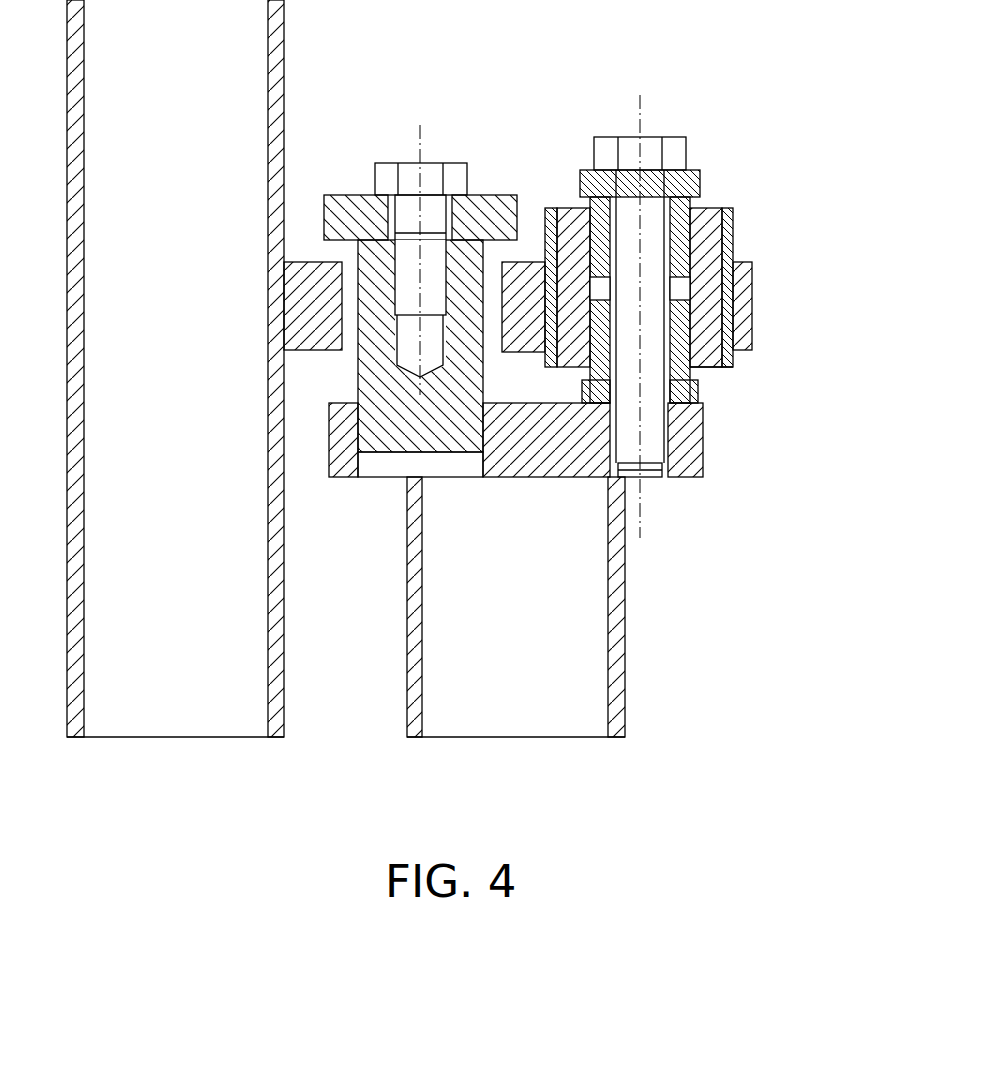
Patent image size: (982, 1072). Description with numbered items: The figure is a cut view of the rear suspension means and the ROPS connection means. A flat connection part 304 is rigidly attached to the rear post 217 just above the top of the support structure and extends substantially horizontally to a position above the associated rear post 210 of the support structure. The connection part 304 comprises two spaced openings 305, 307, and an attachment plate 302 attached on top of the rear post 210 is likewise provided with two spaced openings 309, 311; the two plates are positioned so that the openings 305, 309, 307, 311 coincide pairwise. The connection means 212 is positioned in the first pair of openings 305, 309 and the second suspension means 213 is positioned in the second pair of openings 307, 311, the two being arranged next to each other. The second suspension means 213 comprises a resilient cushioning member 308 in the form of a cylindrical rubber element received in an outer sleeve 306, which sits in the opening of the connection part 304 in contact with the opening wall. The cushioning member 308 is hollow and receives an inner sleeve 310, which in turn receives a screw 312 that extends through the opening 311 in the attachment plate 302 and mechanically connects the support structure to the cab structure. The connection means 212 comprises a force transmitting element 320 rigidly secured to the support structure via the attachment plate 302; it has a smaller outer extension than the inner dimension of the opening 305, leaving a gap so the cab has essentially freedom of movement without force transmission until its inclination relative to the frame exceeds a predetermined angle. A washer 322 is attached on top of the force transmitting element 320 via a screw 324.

The rear post of the support structure 210 is at (625, 607).
The connection means 212 is at (428, 115).
The second suspension means 213 is at (733, 183).
The rear post 217 is at (283, 680).
The attachment plate 302 is at (697, 440).
The connection part 304 is at (743, 287).
The opening 305 is at (503, 286).
The outer sleeve 306 is at (730, 257).
The opening 307 is at (713, 348).
The resilient cushioning member 308 is at (715, 240).
The opening 309 is at (473, 463).
The inner sleeve 310 is at (702, 183).
The opening 311 is at (647, 453).
The screw 312 is at (673, 148).
The force transmitting element 320 is at (387, 440).
The washer 322 is at (346, 195).
The screw 324 is at (432, 172).